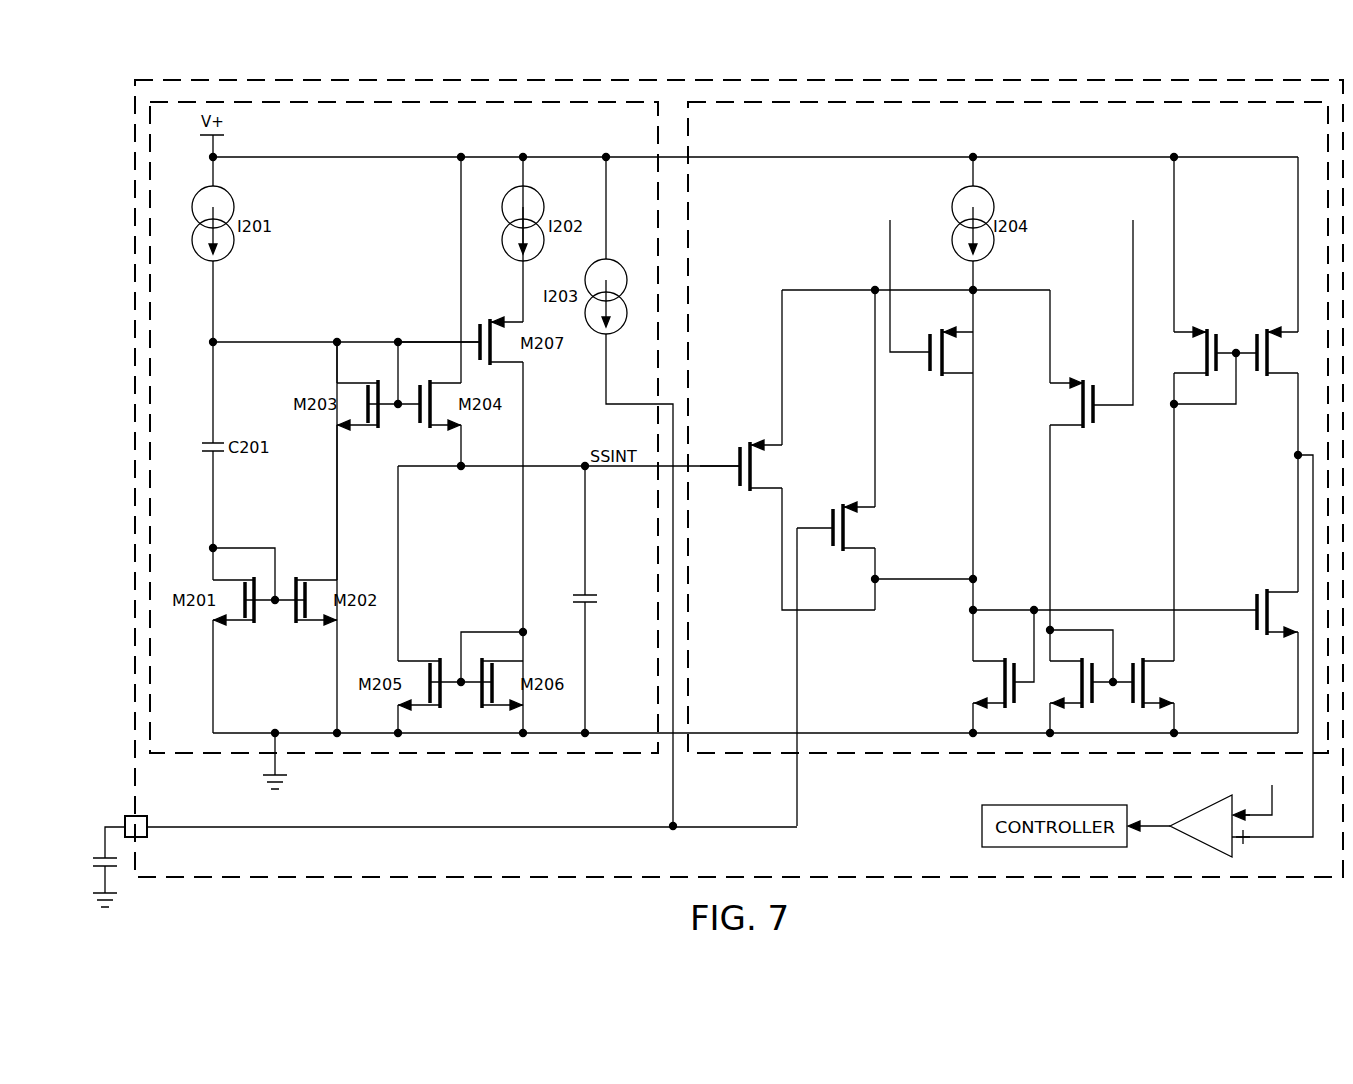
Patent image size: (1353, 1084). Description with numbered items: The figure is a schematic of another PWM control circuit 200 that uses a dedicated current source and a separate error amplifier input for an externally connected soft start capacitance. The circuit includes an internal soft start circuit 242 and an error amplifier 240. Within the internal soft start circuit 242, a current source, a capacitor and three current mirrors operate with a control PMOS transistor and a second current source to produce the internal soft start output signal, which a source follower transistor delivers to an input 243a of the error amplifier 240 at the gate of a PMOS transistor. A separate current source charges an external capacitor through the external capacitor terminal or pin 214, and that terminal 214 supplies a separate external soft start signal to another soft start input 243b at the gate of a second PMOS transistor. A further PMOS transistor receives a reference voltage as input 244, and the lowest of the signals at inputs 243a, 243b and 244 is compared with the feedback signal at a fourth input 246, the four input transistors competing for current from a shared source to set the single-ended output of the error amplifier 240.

The PWM control circuit 200 is at (128, 321).
The external capacitor terminal 214 is at (125, 818).
The internal soft start circuit 242 is at (402, 764).
The error amplifier 240 is at (908, 764).
The error amplifier input 243a is at (708, 467).
The soft start input 243b is at (797, 640).
The reference voltage input 244 is at (888, 270).
The feedback input 246 is at (1132, 270).